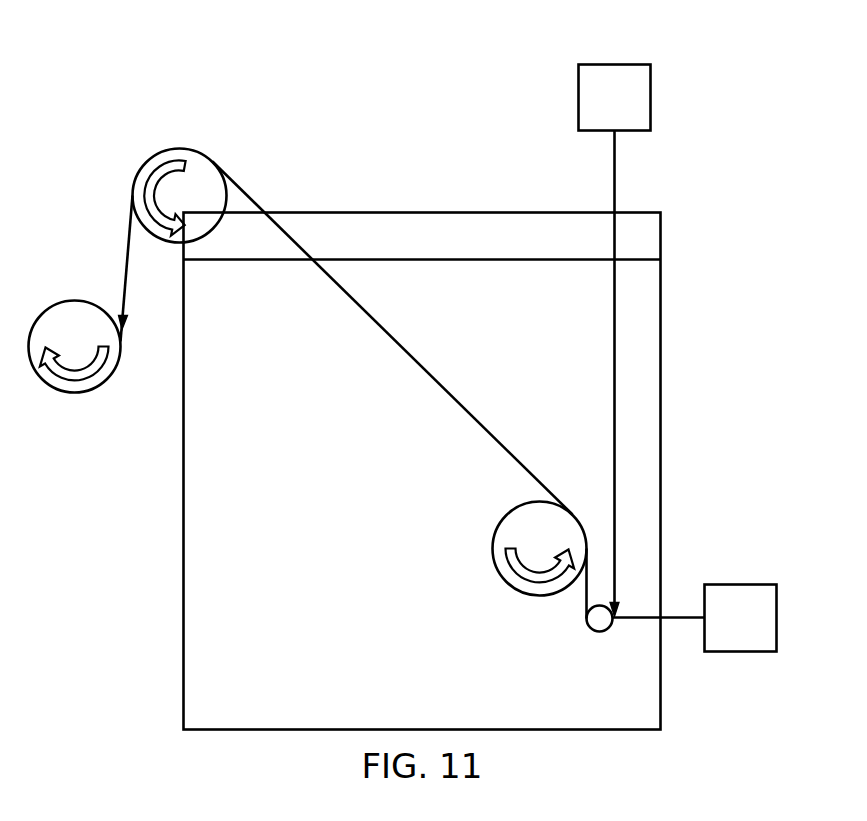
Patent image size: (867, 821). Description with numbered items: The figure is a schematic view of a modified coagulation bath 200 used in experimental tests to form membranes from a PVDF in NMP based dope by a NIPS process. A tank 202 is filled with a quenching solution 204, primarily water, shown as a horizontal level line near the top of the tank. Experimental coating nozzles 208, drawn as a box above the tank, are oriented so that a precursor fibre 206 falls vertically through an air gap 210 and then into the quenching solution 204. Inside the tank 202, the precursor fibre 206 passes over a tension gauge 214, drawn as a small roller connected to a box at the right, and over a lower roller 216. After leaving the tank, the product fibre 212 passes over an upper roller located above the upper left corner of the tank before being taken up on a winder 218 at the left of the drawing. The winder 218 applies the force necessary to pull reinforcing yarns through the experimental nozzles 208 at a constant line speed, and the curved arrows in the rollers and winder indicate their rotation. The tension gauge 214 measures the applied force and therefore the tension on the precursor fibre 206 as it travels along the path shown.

The coagulation bath 200 is at (712, 26).
The tank 202 is at (660, 447).
The quenching solution 204 is at (636, 398).
The precursor fibre 206 is at (613, 182).
The coating nozzles 208 is at (652, 78).
The air gap 210 is at (687, 130).
The product fibre 212 is at (243, 190).
The tension gauge 214 is at (759, 628).
The lower roller 216 is at (568, 533).
The winder 218 is at (55, 297).